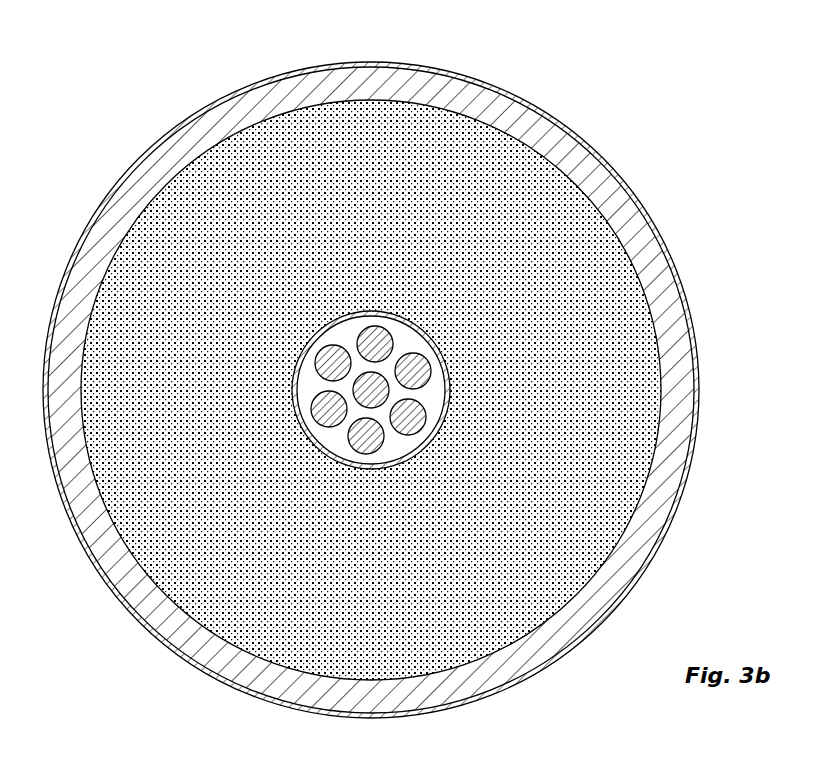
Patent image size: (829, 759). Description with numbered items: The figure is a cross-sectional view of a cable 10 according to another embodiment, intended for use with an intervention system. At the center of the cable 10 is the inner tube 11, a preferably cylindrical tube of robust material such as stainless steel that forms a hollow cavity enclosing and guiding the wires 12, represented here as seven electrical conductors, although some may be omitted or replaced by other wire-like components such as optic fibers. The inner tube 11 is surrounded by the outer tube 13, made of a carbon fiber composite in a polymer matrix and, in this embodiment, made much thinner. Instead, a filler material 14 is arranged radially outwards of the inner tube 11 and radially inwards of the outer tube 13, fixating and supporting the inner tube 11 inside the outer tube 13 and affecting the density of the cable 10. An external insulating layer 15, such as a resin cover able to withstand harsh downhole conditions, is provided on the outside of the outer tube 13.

The cable 10 is at (650, 159).
The inner tube 11 is at (445, 352).
The wires 12 is at (377, 342).
The outer tube 13 is at (98, 527).
The filler material 14 is at (580, 522).
The insulating layer 15 is at (197, 118).